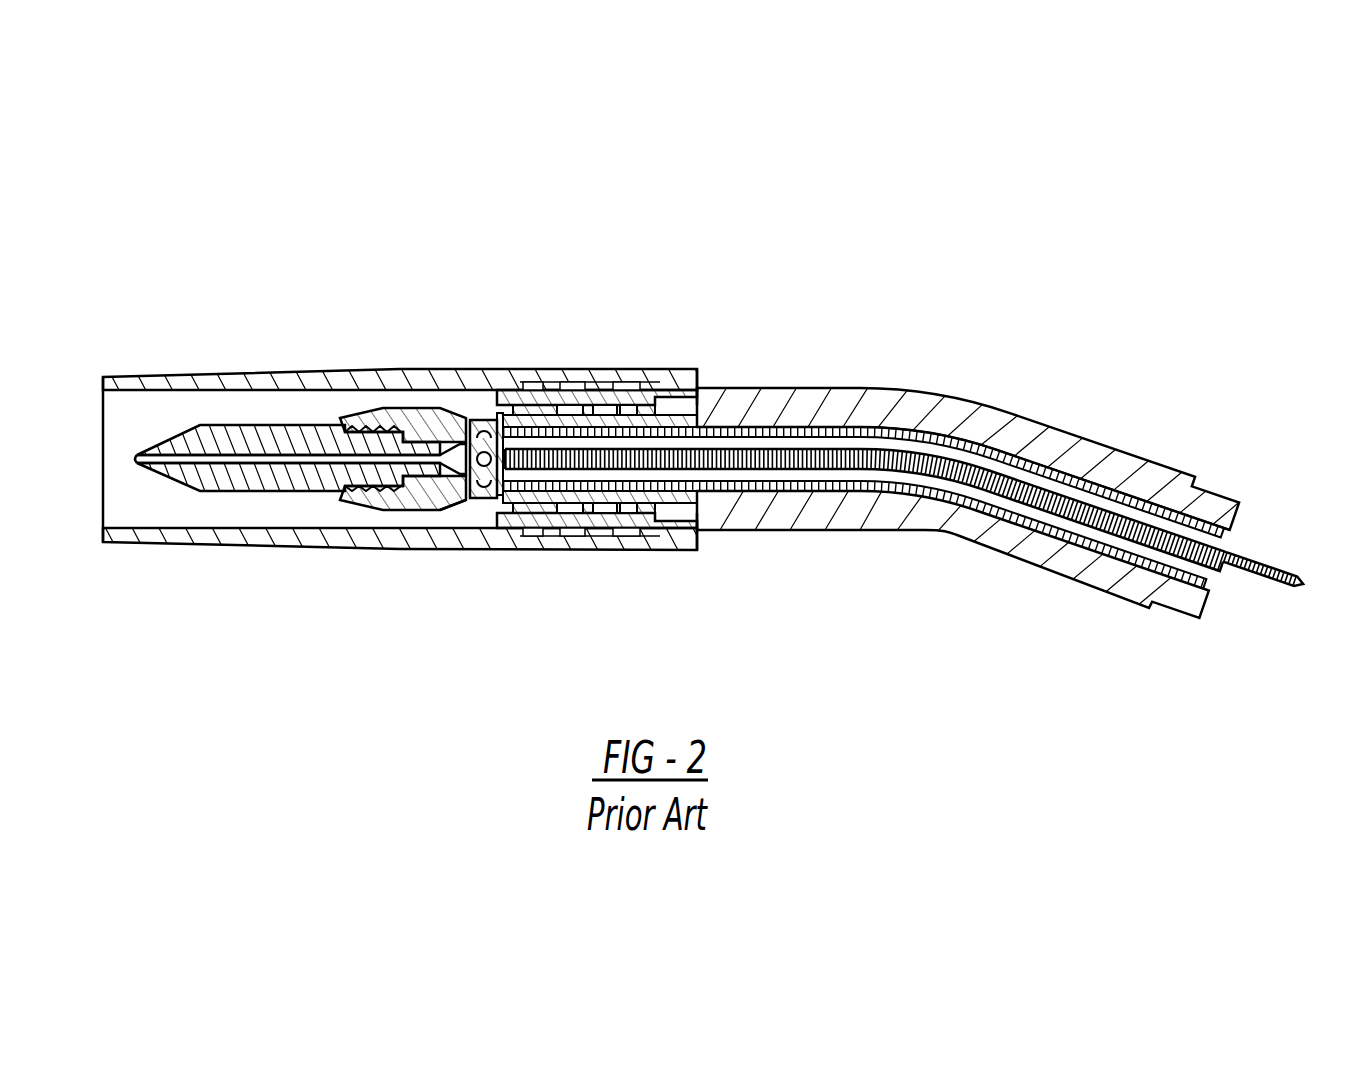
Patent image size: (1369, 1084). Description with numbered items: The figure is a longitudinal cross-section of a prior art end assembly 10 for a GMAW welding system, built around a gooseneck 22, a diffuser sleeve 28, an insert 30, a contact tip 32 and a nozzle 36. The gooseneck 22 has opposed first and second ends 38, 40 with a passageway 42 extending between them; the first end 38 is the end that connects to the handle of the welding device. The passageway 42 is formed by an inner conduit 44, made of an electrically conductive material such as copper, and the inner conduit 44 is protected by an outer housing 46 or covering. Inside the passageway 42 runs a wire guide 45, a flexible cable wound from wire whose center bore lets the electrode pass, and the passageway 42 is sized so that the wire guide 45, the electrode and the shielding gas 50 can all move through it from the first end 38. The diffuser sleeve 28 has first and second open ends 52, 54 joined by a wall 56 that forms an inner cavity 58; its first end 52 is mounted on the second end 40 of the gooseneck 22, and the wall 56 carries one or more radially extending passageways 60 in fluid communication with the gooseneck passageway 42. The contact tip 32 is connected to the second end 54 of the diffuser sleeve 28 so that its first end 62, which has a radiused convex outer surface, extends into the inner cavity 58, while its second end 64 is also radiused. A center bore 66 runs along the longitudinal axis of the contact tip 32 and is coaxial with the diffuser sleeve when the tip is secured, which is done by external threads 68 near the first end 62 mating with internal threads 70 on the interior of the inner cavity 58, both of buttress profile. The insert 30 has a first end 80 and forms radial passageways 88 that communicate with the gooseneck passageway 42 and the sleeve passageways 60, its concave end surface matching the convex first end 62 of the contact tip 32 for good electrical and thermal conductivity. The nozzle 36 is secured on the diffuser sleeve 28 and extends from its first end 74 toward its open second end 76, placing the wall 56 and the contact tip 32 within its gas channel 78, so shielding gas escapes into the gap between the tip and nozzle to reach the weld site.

The end assembly 10 is at (814, 220).
The gooseneck 22 is at (1110, 580).
The diffuser sleeve 28 is at (506, 497).
The insert 30 is at (440, 420).
The contact tip 32 is at (297, 435).
The nozzle 36 is at (405, 451).
The first end 38 is at (1238, 515).
The second end 40 is at (513, 488).
The passageway 42 is at (863, 452).
The inner conduit 44 is at (1020, 455).
The wire guide 45 is at (823, 467).
The outer housing 46 is at (506, 456).
The gas 50 is at (888, 446).
The first open end 52 is at (494, 410).
The second open end 54 is at (385, 473).
The wall 56 is at (425, 503).
The inner cavity 58 is at (682, 372).
The radially extending passageway 60 is at (453, 490).
The first end 62 is at (478, 453).
The second end 64 is at (138, 440).
The center bore 66 is at (313, 458).
The external threads 68 is at (360, 500).
The internal threads 70 is at (362, 430).
The first end 74 is at (690, 378).
The second end 76 is at (122, 377).
The gas channel 78 is at (140, 500).
The first end 80 is at (517, 477).
The radial passageway 88 is at (486, 490).